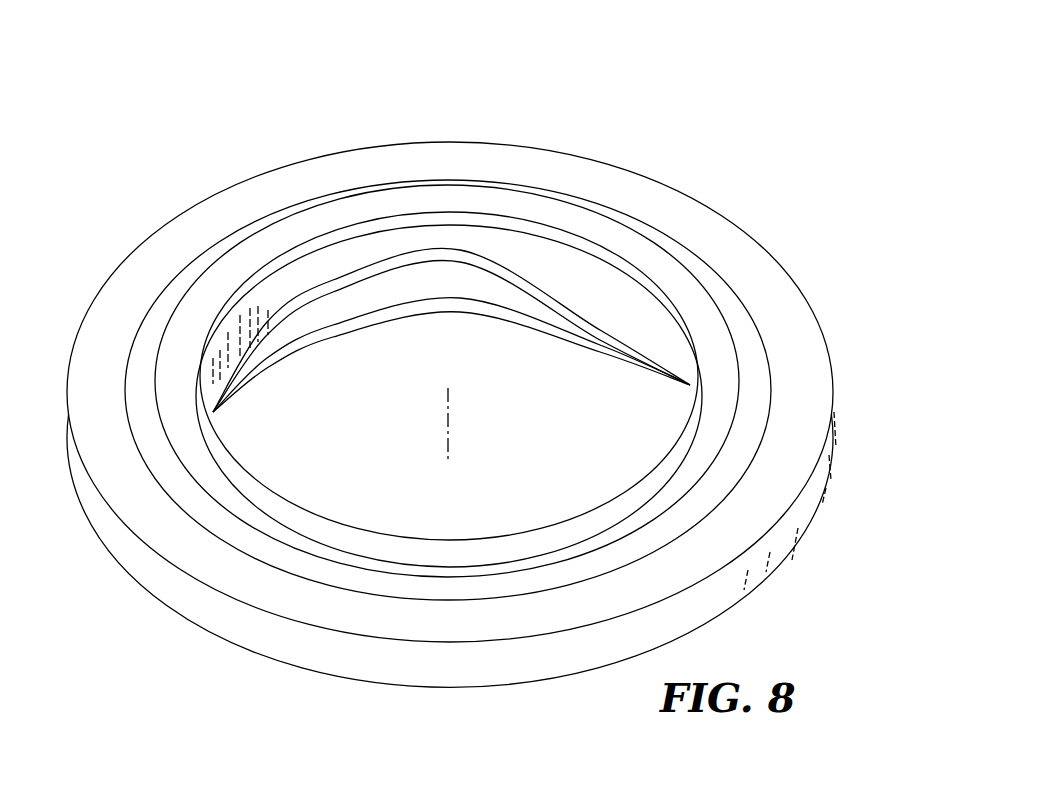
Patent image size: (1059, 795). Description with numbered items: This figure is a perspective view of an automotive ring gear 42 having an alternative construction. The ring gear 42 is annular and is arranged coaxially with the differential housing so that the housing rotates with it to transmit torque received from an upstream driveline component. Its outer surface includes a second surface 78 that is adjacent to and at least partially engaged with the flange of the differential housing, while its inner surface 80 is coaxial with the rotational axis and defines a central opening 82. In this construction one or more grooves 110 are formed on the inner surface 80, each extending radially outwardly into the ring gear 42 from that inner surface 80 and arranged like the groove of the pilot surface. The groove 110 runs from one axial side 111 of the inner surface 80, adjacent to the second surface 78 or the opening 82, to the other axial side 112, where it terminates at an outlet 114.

The ring gear 42 is at (541, 118).
The second surface 78 is at (768, 290).
The inner surface 80 is at (535, 297).
The central opening 82 is at (568, 521).
The groove 110 is at (539, 251).
The one axial side 111 is at (373, 237).
The other axial side 112 is at (458, 318).
The outlet 114 is at (598, 330).